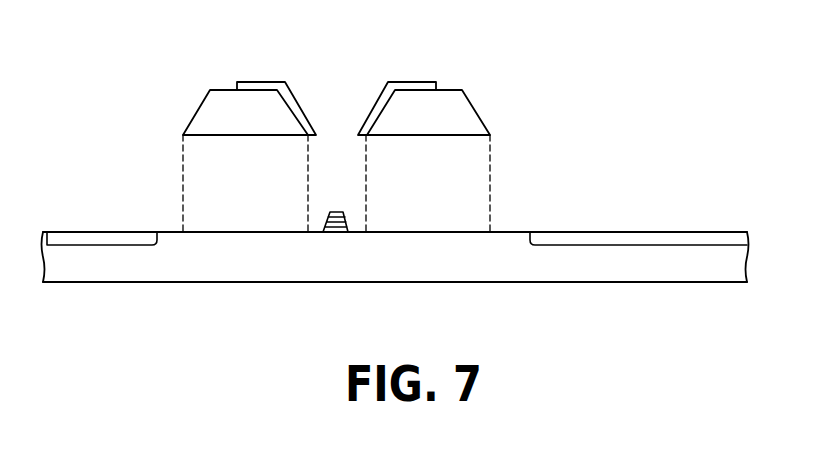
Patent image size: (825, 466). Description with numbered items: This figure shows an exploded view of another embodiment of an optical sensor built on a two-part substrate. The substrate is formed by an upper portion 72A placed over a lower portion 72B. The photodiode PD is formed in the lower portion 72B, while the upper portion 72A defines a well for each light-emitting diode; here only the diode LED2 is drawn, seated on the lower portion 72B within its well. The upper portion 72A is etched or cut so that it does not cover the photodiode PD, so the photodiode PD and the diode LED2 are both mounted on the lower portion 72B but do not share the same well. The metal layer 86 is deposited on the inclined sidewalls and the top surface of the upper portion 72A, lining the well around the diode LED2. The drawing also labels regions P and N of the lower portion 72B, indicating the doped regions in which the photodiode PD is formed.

The metal layer 86 is at (299, 100).
The light-emitting diode LED2 is at (333, 208).
The upper portion 72A is at (571, 130).
The lower portion 72B is at (752, 258).
The photodiode PD is at (100, 228).
The P-type region P is at (47, 238).
The N-type substrate N is at (395, 257).